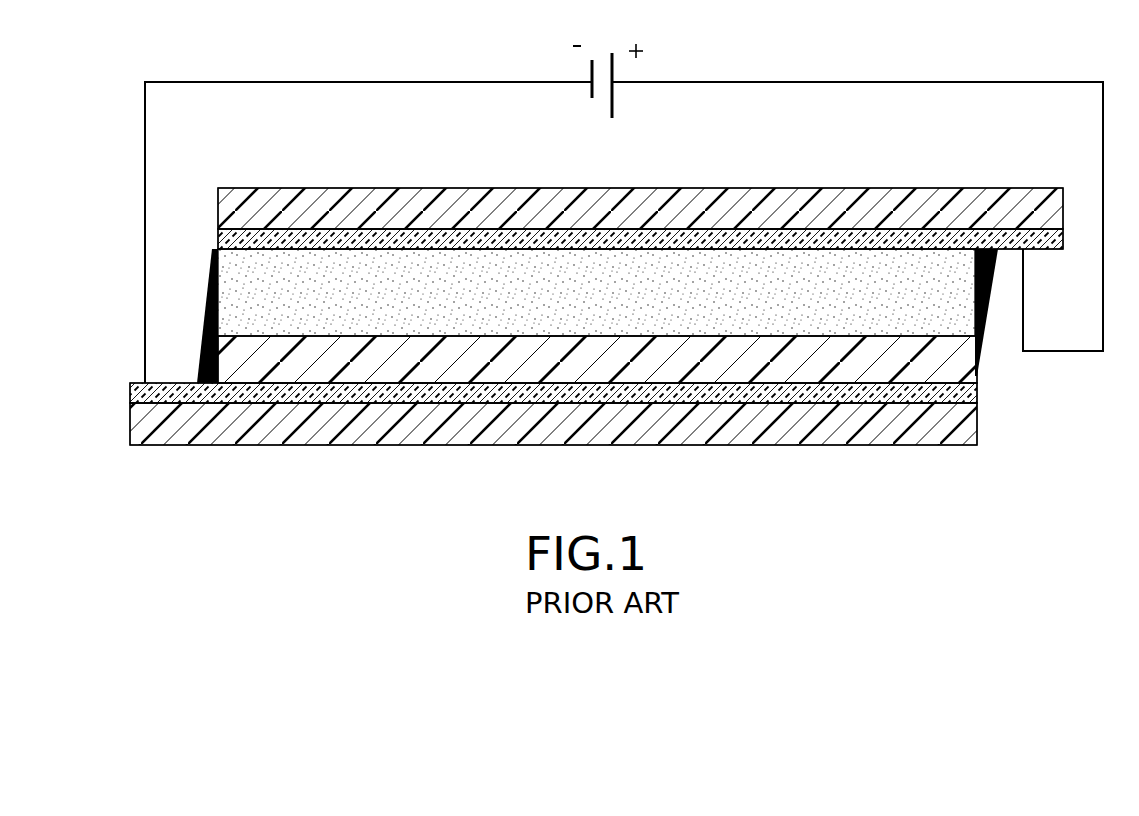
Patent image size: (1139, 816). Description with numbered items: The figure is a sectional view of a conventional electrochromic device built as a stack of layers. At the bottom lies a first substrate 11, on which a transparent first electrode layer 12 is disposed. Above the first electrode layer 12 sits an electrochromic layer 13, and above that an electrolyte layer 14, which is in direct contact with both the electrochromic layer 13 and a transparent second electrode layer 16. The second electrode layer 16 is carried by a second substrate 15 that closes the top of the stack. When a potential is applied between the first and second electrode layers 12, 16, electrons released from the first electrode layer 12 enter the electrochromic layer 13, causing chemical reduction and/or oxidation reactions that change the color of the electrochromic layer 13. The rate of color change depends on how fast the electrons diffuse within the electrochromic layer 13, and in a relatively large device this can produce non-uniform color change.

The first substrate 11 is at (898, 421).
The transparent first electrode layer 12 is at (967, 388).
The electrochromic layer 13 is at (230, 363).
The electrolyte layer 14 is at (237, 312).
The second substrate 15 is at (846, 200).
The transparent second electrode layer 16 is at (1056, 238).